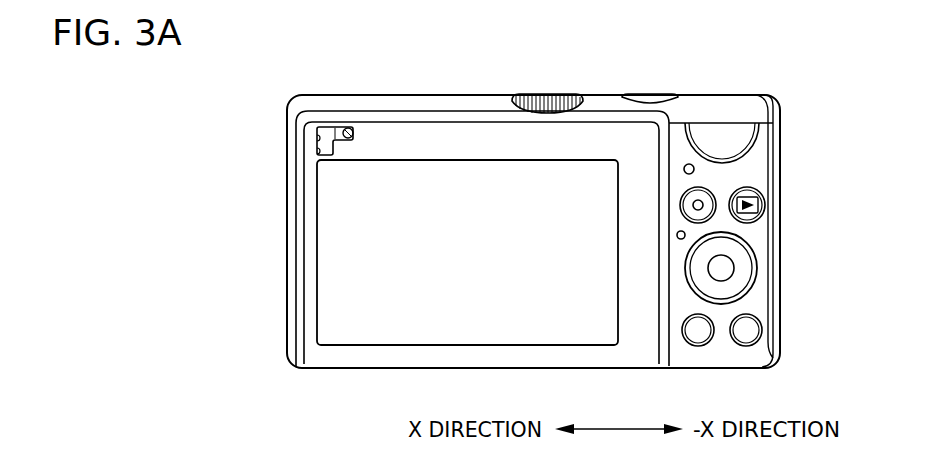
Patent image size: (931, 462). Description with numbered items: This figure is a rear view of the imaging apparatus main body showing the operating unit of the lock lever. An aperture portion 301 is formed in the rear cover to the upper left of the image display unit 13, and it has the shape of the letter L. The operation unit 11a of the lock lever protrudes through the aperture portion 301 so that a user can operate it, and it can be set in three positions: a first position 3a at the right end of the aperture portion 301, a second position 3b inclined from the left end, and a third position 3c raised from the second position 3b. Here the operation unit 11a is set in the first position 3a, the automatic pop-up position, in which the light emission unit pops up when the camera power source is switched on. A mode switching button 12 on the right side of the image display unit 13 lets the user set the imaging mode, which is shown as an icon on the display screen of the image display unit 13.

The aperture portion 301 is at (321, 110).
The operation unit 11a is at (347, 128).
The first position 3a is at (355, 135).
The second position 3b is at (318, 152).
The third position 3c is at (318, 140).
The image display unit 13 is at (357, 307).
The mode switching button 12 is at (699, 328).